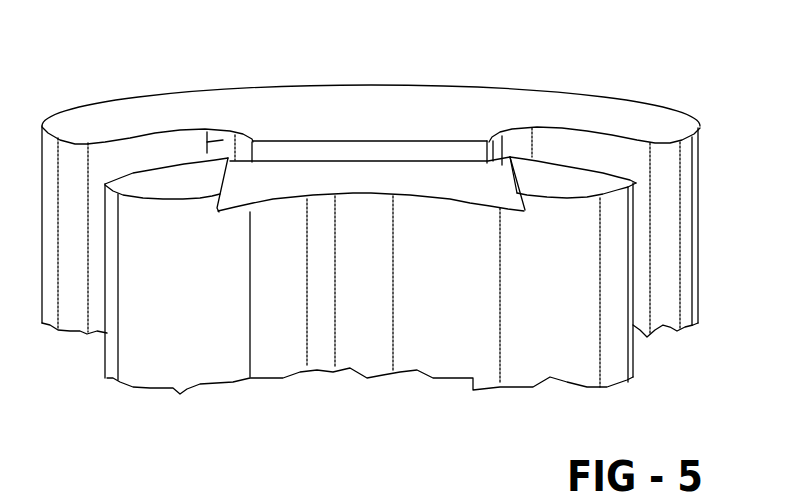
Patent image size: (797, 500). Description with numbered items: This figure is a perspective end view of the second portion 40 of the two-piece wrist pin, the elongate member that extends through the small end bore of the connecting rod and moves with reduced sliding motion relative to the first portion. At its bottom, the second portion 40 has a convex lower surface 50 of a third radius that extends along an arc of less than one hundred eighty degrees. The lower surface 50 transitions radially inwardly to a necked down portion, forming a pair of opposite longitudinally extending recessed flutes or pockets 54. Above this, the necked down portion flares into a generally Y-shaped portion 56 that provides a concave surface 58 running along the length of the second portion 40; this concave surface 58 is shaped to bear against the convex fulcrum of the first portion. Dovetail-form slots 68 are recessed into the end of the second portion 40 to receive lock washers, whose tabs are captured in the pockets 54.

The second portion 40 is at (477, 88).
The convex lower surface 50 is at (573, 96).
The recessed flutes or pockets 54 is at (205, 141).
The Y-shaped portion 56 is at (582, 168).
The concave surface 58 is at (562, 199).
The slots 68 is at (234, 207).